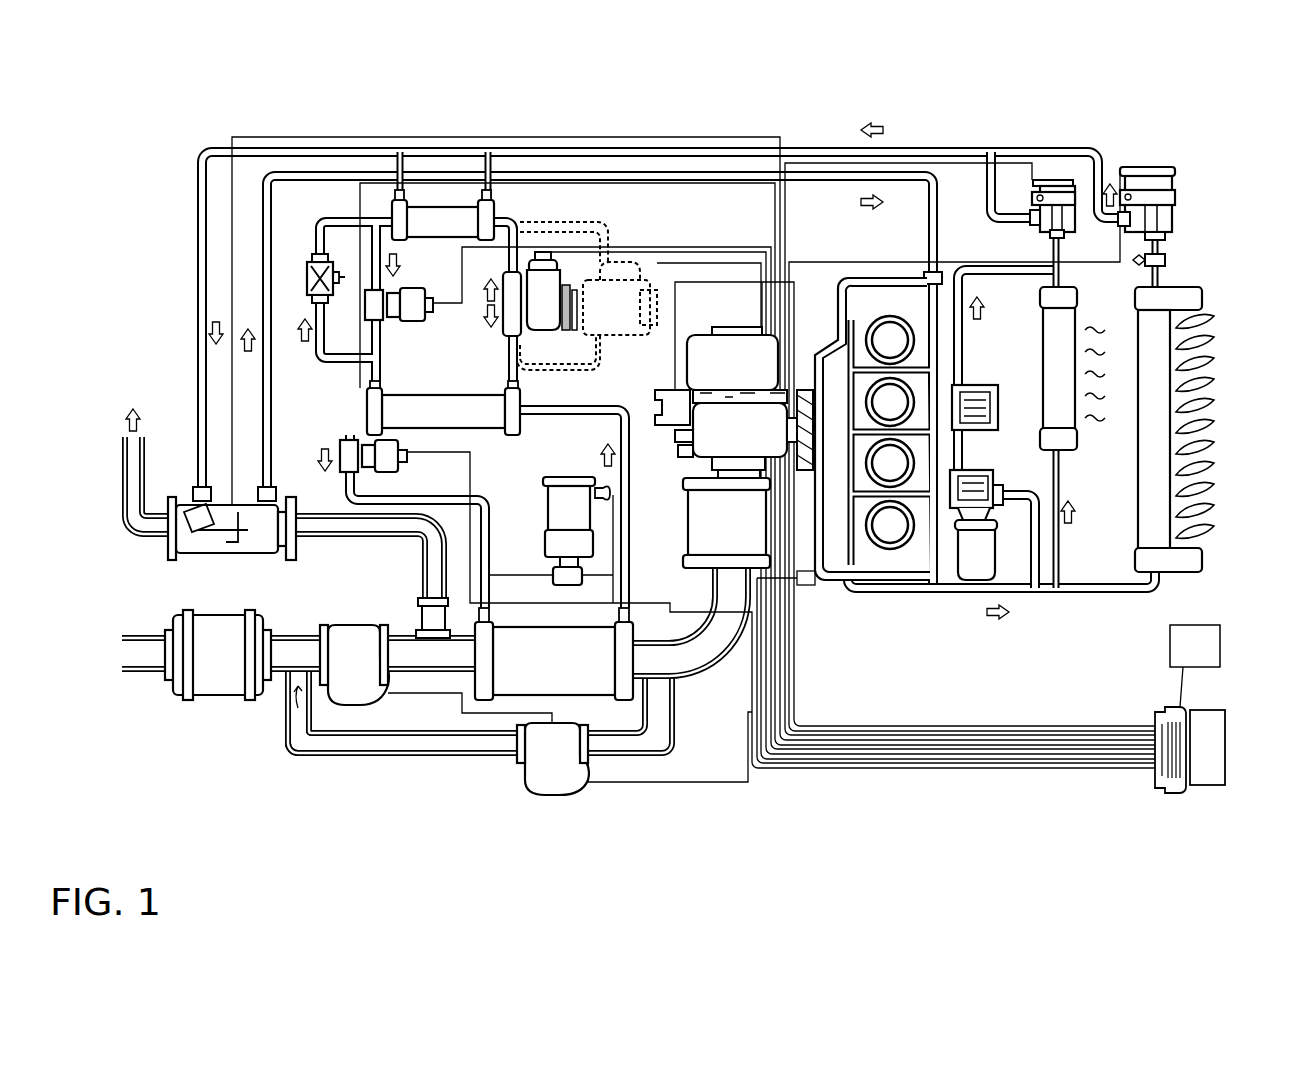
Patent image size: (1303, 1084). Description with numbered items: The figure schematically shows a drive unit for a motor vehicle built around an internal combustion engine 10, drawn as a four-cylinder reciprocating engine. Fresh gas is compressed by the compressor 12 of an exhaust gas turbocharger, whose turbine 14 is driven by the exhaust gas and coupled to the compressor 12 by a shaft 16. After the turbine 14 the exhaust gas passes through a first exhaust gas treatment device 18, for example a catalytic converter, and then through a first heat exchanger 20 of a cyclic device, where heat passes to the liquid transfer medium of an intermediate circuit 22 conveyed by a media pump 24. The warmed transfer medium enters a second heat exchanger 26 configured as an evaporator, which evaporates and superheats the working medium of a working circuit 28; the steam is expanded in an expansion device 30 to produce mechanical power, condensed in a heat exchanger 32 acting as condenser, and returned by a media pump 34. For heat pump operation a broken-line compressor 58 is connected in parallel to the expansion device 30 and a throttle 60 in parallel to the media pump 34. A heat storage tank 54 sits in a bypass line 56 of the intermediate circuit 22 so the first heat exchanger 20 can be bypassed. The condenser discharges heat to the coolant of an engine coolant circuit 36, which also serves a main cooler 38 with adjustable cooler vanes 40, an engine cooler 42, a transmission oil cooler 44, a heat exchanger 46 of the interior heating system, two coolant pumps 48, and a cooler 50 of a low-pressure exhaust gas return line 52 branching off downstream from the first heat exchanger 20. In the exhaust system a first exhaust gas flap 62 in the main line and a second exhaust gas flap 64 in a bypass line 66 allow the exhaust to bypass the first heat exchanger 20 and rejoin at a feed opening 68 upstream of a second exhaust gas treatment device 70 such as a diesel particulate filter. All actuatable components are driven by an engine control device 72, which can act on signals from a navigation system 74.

The internal combustion engine 10 is at (925, 548).
The compressor 12 is at (737, 397).
The turbine 14 is at (711, 418).
The shaft 16 is at (763, 350).
The first exhaust gas treatment device 18 is at (737, 522).
The first heat exchanger 20 is at (605, 655).
The intermediate circuit 22 is at (485, 587).
The media pump 24 is at (367, 453).
The second heat exchanger 26 is at (372, 405).
The working circuit 28 is at (507, 222).
The expansion device 30 is at (543, 297).
The heat exchanger 32 is at (443, 220).
The media pump 34 is at (415, 303).
The engine coolant circuit 36 is at (270, 148).
The main cooler 38 is at (1155, 322).
The cooler vanes 40 is at (1205, 343).
The engine cooler 42 is at (978, 498).
The transmission oil cooler 44 is at (978, 408).
The heat exchanger 46 is at (1060, 332).
The coolant pumps 48 is at (1060, 188).
The cooler 50 is at (207, 547).
The low-pressure exhaust gas return line 52 is at (125, 482).
The heat storage tank 54 is at (573, 518).
The bypass line 56 is at (513, 575).
The compressor 58 is at (622, 285).
The throttle 60 is at (312, 277).
The first exhaust gas flap 62 is at (357, 677).
The second exhaust gas flap 64 is at (554, 763).
The bypass line 66 is at (410, 743).
The feed opening 68 is at (297, 678).
The second exhaust gas treatment device 70 is at (212, 672).
The engine control device 72 is at (1210, 748).
The navigation system 74 is at (1210, 642).